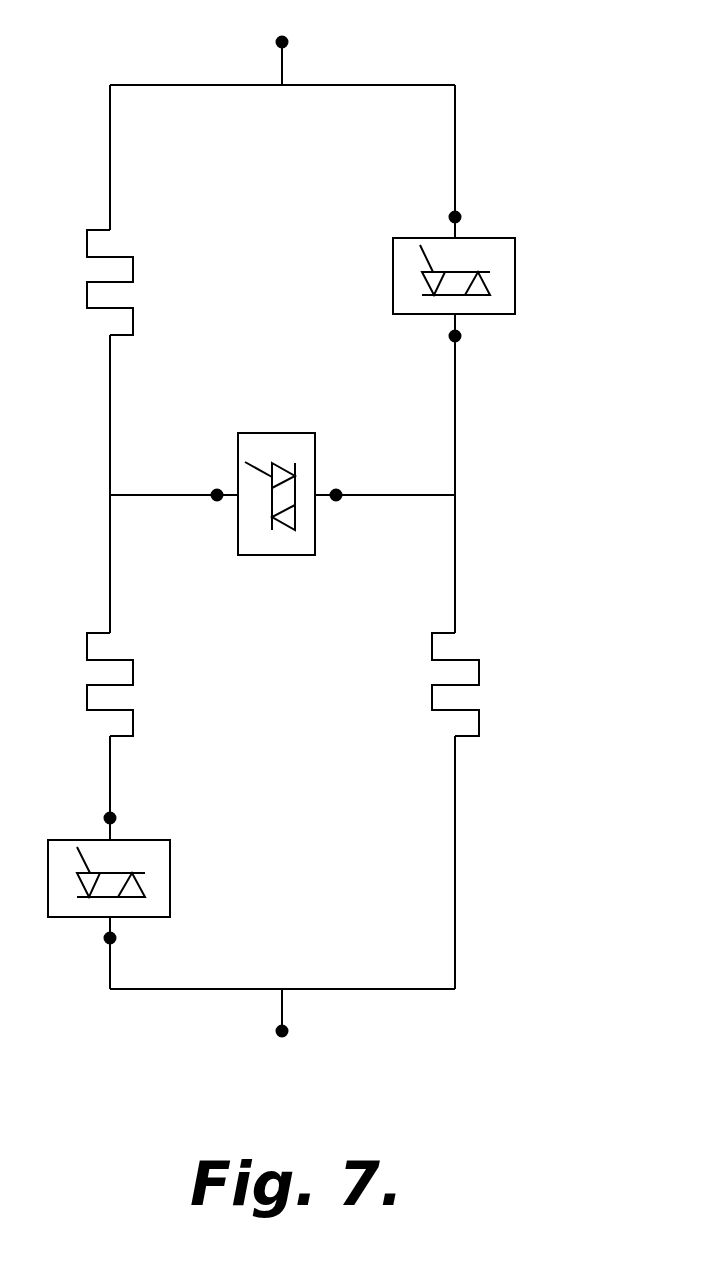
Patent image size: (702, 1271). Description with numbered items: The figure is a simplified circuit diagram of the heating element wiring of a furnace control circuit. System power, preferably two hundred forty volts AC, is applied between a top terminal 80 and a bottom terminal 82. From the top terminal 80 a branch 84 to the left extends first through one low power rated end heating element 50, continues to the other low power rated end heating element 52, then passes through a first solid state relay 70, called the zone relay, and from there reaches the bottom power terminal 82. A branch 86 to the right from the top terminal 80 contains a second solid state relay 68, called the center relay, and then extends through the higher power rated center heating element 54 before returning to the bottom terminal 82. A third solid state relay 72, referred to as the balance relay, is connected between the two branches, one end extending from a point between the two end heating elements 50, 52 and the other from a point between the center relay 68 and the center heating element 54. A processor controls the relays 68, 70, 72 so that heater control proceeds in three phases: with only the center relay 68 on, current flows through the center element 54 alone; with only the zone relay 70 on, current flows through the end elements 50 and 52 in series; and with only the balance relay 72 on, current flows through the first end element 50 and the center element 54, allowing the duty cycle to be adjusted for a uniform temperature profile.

The end heating element 50 is at (145, 277).
The end heating element 52 is at (145, 680).
The center heating element 54 is at (494, 680).
The center relay 68 is at (515, 270).
The zone relay 70 is at (170, 873).
The balance relay 72 is at (315, 457).
The top terminal 80 is at (288, 41).
The bottom terminal 82 is at (288, 1030).
The branch 84 is at (138, 85).
The branch 86 is at (420, 85).